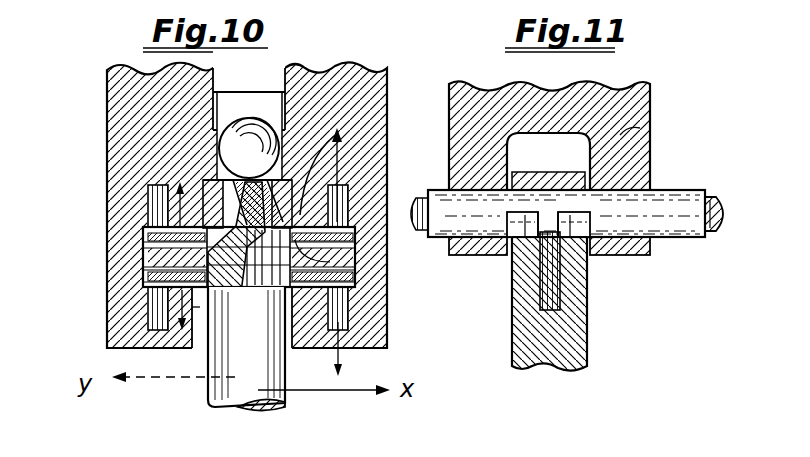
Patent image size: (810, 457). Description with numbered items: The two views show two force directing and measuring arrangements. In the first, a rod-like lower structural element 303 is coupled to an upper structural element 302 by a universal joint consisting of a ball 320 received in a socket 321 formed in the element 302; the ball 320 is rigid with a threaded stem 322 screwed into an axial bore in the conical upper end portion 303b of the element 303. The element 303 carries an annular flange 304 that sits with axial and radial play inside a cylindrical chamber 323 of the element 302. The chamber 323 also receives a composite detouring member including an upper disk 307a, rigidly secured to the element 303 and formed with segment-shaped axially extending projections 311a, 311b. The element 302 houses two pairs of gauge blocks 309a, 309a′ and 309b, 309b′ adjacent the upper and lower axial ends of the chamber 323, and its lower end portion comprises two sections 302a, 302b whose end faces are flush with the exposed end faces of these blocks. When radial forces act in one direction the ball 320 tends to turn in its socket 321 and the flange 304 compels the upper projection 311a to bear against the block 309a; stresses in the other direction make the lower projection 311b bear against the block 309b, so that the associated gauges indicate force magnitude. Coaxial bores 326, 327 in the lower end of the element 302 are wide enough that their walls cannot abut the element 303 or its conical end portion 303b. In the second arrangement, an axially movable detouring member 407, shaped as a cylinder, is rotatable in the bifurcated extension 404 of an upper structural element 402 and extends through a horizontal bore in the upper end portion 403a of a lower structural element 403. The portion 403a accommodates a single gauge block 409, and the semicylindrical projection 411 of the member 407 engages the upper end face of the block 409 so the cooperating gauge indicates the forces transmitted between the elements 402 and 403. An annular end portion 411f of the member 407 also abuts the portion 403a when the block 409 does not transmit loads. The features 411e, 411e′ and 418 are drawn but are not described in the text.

In FIG. 10, the upper structural element 302 is at (394, 101).
In FIG. 10, the lower end section 302a is at (388, 95).
In FIG. 10, the lower end section 302b is at (305, 300).
In FIG. 10, the lower structural element 303 is at (255, 410).
In FIG. 10, the conical upper end portion 303b is at (240, 178).
In FIG. 10, the annular flange 304 is at (280, 282).
In FIG. 10, the upper disk 307a is at (315, 258).
In FIG. 10, the gauge block 309a is at (350, 192).
In FIG. 10, the gauge block 309a′ is at (147, 198).
In FIG. 10, the gauge block 309b is at (350, 320).
In FIG. 10, the gauge block 309b′ is at (147, 315).
In FIG. 10, the upper projection 311a is at (360, 232).
In FIG. 10, the lower projection 311b is at (334, 290).
In FIG. 10, the ball 320 is at (262, 120).
In FIG. 10, the socket 321 is at (217, 148).
In FIG. 10, the threaded stem 322 is at (220, 182).
In FIG. 10, the cylindrical chamber 323 is at (143, 252).
In FIG. 10, the coaxial bore 326 is at (192, 348).
In FIG. 10, the coaxial bore 327 is at (300, 150).
In FIG. 11, the upper structural element 402 is at (658, 99).
In FIG. 11, the lower structural element 403 is at (592, 346).
In FIG. 11, the upper end portion 403a is at (546, 180).
In FIG. 11, the bifurcated extension 404 is at (640, 128).
In FIG. 11, the detouring member 407 is at (708, 181).
In FIG. 11, the gauge block 409 is at (552, 290).
In FIG. 11, the semicylindrical projection 411 is at (540, 298).
In FIG. 11, the coupling tooth 411e is at (583, 253).
In FIG. 11, the coupling tooth 411e′ is at (525, 240).
In FIG. 11, the annular end portion 411f is at (670, 188).
In FIG. 11, the retaining pin 418 is at (715, 232).